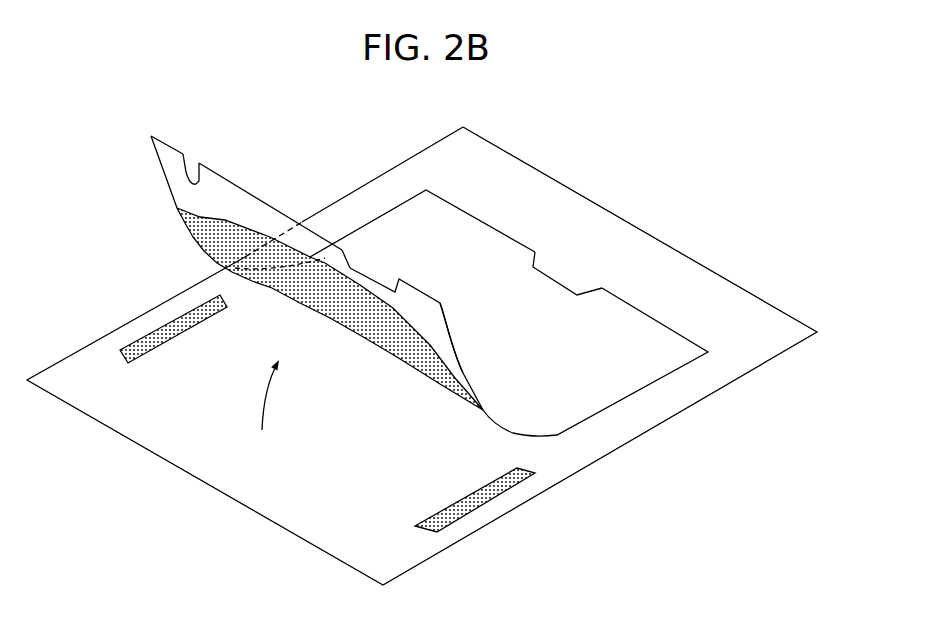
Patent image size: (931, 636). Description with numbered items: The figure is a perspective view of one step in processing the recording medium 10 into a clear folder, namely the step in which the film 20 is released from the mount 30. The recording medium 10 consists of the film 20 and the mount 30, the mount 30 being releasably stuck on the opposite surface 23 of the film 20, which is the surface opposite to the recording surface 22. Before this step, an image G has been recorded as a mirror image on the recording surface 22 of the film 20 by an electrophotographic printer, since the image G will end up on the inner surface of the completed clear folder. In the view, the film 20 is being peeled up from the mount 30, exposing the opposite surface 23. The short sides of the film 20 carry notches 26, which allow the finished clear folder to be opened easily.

The recording medium 10 is at (633, 117).
The film 20 is at (501, 224).
The recording surface 22 is at (637, 335).
The opposite surface 23 is at (177, 185).
The notches 26 is at (187, 163).
The mount 30 is at (509, 149).
The image G is at (429, 332).